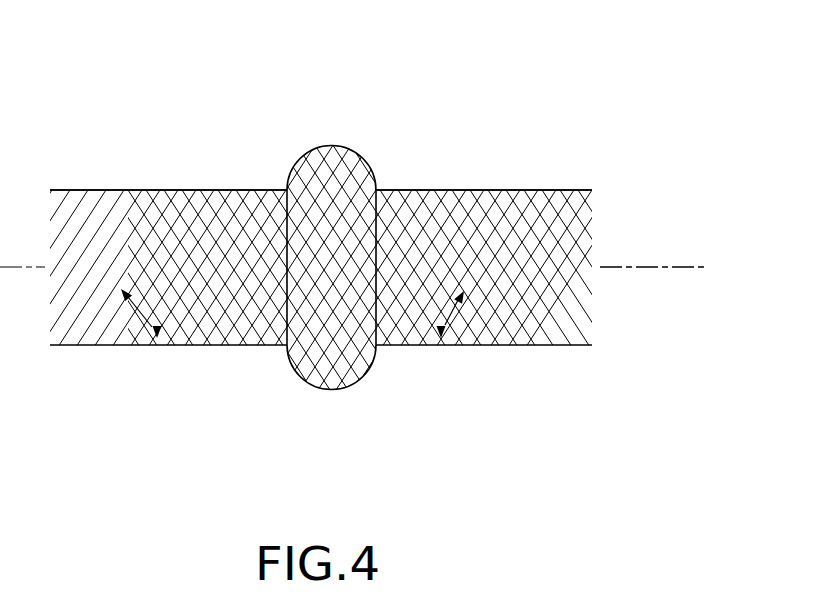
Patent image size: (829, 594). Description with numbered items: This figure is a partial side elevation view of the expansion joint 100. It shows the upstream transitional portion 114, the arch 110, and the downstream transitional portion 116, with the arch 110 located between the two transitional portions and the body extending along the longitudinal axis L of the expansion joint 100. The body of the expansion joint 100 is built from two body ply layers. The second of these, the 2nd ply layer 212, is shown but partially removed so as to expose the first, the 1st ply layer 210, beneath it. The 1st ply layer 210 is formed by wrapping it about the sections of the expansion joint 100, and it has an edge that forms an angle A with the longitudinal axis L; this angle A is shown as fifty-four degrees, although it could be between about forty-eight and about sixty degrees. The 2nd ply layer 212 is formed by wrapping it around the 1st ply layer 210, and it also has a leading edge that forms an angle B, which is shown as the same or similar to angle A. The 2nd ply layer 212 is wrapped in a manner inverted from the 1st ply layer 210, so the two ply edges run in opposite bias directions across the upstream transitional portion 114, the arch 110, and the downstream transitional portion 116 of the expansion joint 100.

The expansion joint 100 is at (650, 110).
The arch 110 is at (338, 390).
The upstream transitional portion 114 is at (488, 346).
The downstream transitional portion 116 is at (160, 190).
The 1st ply layer 210 is at (78, 346).
The 2nd ply layer 212 is at (463, 190).
The longitudinal axis L is at (664, 268).
The angle A is at (152, 313).
The angle B is at (446, 316).